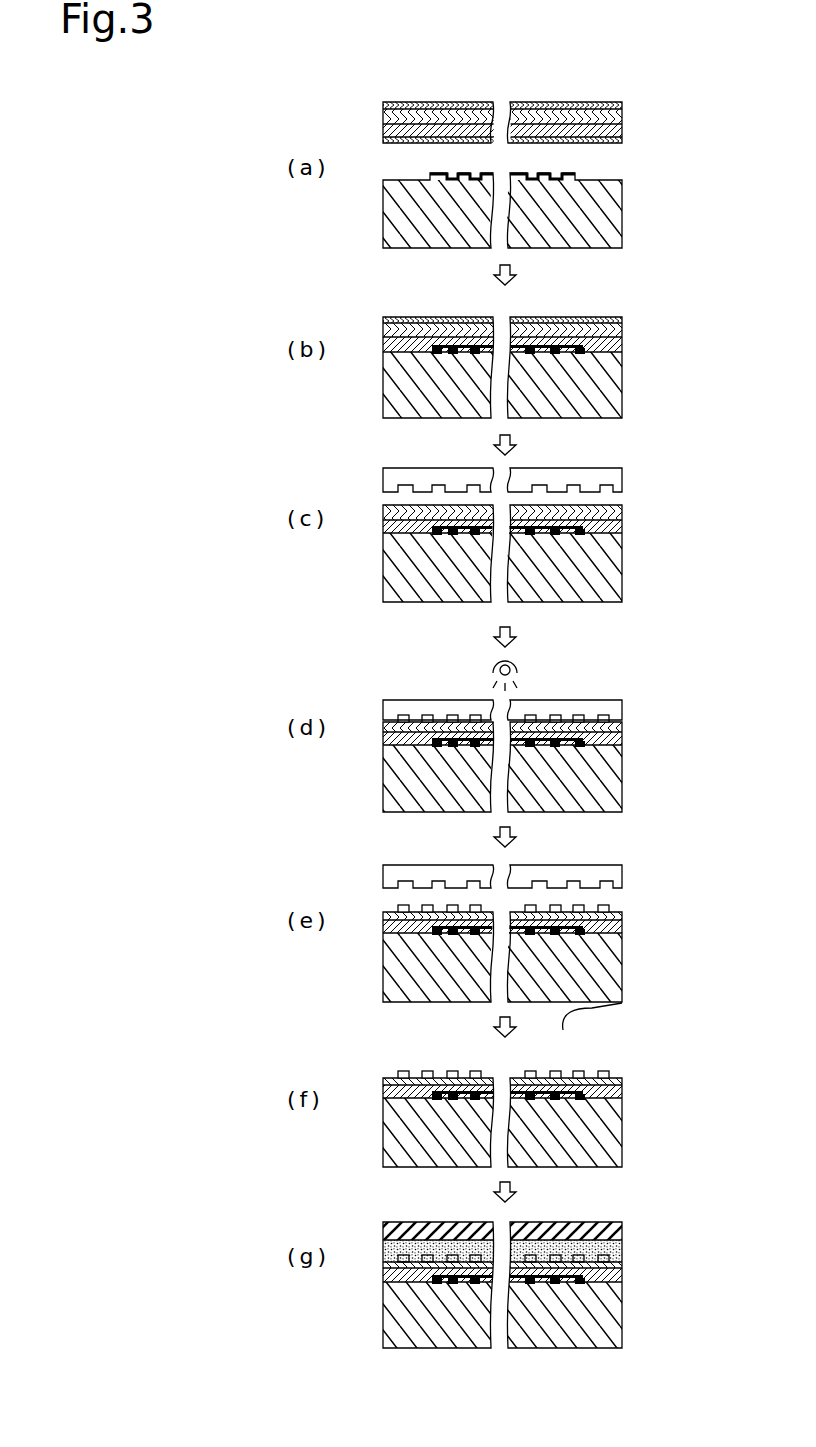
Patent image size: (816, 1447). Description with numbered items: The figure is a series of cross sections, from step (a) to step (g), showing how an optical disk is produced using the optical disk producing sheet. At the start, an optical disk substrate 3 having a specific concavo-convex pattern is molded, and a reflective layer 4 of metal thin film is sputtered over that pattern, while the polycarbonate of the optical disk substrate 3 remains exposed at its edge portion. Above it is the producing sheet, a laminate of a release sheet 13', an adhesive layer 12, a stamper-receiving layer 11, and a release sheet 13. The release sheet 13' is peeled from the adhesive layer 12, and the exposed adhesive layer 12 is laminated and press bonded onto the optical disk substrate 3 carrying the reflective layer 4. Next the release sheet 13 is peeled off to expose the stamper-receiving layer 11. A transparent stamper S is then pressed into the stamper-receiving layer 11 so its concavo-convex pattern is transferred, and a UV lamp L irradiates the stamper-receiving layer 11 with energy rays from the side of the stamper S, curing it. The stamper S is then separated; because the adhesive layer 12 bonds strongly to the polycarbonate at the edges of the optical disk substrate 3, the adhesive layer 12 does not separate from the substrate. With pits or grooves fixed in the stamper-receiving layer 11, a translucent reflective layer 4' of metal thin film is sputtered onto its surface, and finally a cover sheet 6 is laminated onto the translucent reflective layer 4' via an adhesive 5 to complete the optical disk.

The optical disk substrate 3 is at (622, 226).
The reflective layer 4 is at (528, 717).
The translucent reflective layer 4' is at (535, 1145).
The adhesive 5 is at (622, 1247).
The cover sheet 6 is at (614, 1222).
The stamper-receiving layer 11 is at (622, 115).
The adhesive layer 12 is at (622, 128).
The release sheet 13 is at (537, 200).
The release sheet 13' is at (538, 152).
The transparent stamper S is at (622, 478).
The UV lamp L is at (486, 666).